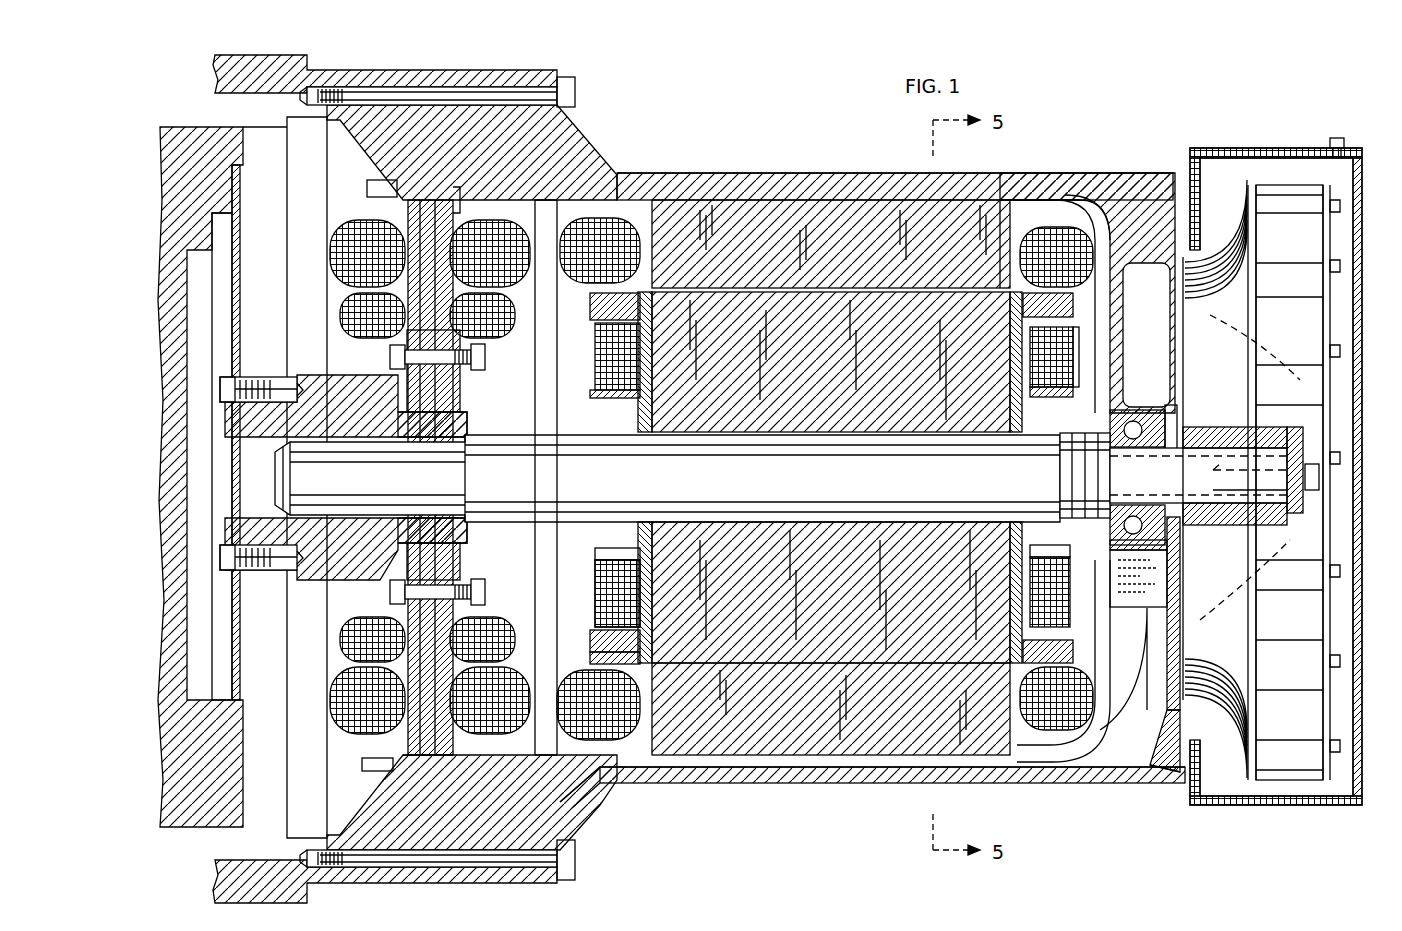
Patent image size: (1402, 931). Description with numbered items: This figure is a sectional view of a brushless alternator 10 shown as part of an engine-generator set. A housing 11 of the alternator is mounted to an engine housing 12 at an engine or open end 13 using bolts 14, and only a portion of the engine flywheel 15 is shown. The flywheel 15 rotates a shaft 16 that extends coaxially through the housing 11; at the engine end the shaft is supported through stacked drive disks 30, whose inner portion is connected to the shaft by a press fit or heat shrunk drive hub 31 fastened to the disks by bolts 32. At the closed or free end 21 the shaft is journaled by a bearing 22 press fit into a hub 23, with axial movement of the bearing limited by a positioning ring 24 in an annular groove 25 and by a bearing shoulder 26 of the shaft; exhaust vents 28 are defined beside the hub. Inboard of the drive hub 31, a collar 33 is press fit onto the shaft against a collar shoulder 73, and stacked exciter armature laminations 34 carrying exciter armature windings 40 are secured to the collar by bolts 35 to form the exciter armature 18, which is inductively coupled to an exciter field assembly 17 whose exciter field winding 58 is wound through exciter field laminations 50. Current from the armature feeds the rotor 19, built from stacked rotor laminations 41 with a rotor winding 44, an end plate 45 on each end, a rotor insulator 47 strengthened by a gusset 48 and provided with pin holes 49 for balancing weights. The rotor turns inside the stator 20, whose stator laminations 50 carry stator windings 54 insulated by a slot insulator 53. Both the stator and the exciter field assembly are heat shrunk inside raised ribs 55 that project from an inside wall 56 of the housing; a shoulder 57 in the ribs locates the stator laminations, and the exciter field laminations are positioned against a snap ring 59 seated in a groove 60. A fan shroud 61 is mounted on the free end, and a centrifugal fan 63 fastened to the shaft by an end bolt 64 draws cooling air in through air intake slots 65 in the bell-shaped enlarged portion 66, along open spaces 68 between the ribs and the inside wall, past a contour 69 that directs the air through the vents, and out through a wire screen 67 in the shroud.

The brushless alternator 10 is at (702, 172).
The housing 11 is at (768, 173).
The engine housing 12 is at (245, 52).
The engine or open end 13 is at (372, 68).
The bolts 14 is at (577, 90).
The flywheel 15 is at (165, 175).
The shaft 16 is at (645, 430).
The exciter field assembly 17 is at (398, 212).
The exciter armature 18 is at (398, 622).
The rotor 19 is at (880, 660).
The stator 20 is at (832, 226).
The closed or free end 21 is at (1163, 172).
The bearing 22 is at (1138, 455).
The hub 23 is at (1170, 412).
The positioning ring 24 is at (1152, 410).
The annular groove 25 is at (1215, 535).
The bearing shoulder 26 is at (1097, 452).
The exhaust vents 28 is at (1137, 590).
The drive disks 30 is at (240, 295).
The drive hub 31 is at (247, 422).
The bolts 32 is at (265, 376).
The collar 33 is at (462, 395).
The exciter armature laminations 34 is at (447, 548).
The bolts 35 is at (390, 355).
The exciter armature windings 40 is at (343, 637).
The rotor laminations 41 is at (648, 500).
The rotor winding 44 is at (598, 598).
The end plate 45 is at (592, 638).
The rotor insulator 47 is at (598, 330).
The gusset 48 is at (600, 394).
The pin holes 49 is at (590, 305).
The stator laminations 50 is at (395, 738).
The slot insulator 53 is at (645, 228).
The stator windings 54 is at (1075, 225).
The raised ribs 55 is at (583, 145).
The inside wall 56 is at (1082, 770).
The shoulder 57 is at (1030, 225).
The exciter field winding 58 is at (340, 268).
The snap ring 59 is at (435, 760).
The groove 60 is at (462, 762).
The fan shroud 61 is at (1360, 240).
The centrifugal fan 63 is at (1300, 632).
The end bolt 64 is at (1312, 458).
The air intake slots 65 is at (372, 180).
The enlarged portion 66 is at (598, 787).
The wire screen 67 is at (1228, 150).
The open spaces 68 is at (745, 778).
The contour 69 is at (1152, 772).
The collar shoulder 73 is at (468, 443).